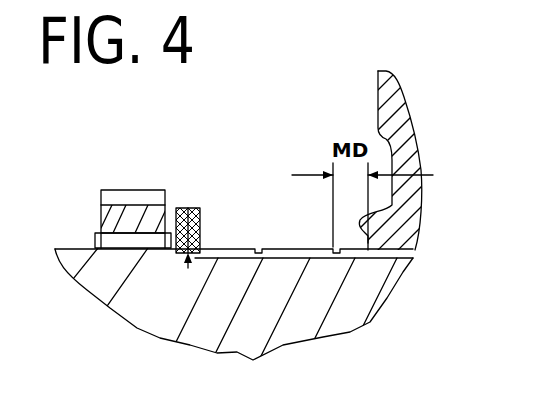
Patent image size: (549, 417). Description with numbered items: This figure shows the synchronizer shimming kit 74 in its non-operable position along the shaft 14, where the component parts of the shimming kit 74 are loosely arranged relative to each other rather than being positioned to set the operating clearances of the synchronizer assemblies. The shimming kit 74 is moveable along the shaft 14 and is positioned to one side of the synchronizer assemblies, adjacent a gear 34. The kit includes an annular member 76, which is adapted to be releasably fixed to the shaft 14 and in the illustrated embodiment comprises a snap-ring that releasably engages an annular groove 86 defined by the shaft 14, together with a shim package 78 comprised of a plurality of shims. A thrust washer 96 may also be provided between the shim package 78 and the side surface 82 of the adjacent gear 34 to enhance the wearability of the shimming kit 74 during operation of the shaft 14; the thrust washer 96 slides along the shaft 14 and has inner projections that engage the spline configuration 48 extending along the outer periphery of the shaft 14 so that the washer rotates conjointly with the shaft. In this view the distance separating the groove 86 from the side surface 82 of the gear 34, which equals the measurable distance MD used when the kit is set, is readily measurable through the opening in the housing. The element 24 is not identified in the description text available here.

The shaft 14 is at (93, 272).
The ring 24 is at (426, 127).
The laterally adjacent gear 34 is at (392, 102).
The spline configuration 48 is at (303, 250).
The synchronizer shimming kit 74 is at (189, 200).
The annular member 76 is at (187, 250).
The shim package 78 is at (187, 251).
The side surface 82 is at (365, 222).
The annular groove 86 is at (349, 257).
The thrust washer 96 is at (201, 229).